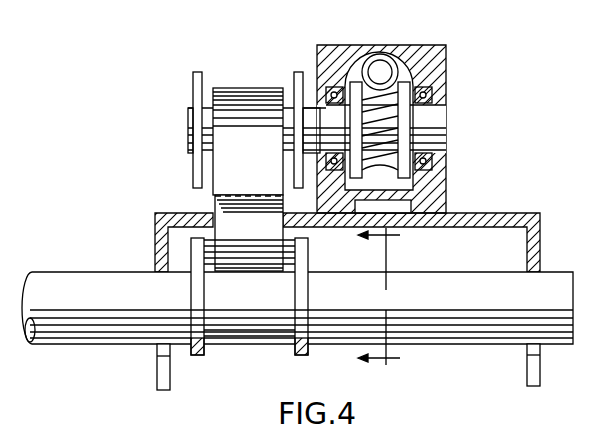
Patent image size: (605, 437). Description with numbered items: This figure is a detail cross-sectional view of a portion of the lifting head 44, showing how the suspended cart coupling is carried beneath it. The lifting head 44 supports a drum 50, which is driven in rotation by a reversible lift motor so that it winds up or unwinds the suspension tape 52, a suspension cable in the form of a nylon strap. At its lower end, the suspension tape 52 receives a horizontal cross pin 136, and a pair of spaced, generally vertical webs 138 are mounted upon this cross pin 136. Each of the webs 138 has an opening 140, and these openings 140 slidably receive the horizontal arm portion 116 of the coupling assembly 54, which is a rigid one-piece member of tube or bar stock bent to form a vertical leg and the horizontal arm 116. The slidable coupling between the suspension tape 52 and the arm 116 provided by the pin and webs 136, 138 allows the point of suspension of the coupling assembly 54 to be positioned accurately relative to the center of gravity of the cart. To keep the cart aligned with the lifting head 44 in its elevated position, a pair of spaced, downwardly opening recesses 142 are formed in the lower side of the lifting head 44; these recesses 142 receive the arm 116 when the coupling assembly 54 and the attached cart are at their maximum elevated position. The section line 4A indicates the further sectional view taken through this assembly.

The lifting head 44 is at (515, 203).
The drum 50 is at (290, 108).
The suspension tape 52 is at (215, 200).
The coupling assembly 54 is at (458, 362).
The horizontal arm portion 116 is at (78, 345).
The horizontal cross pin 136 is at (308, 258).
The vertical webs 138 is at (190, 295).
The openings 140 is at (205, 333).
The downwardly opening recesses 142 is at (158, 358).
The section line 4A is at (395, 300).